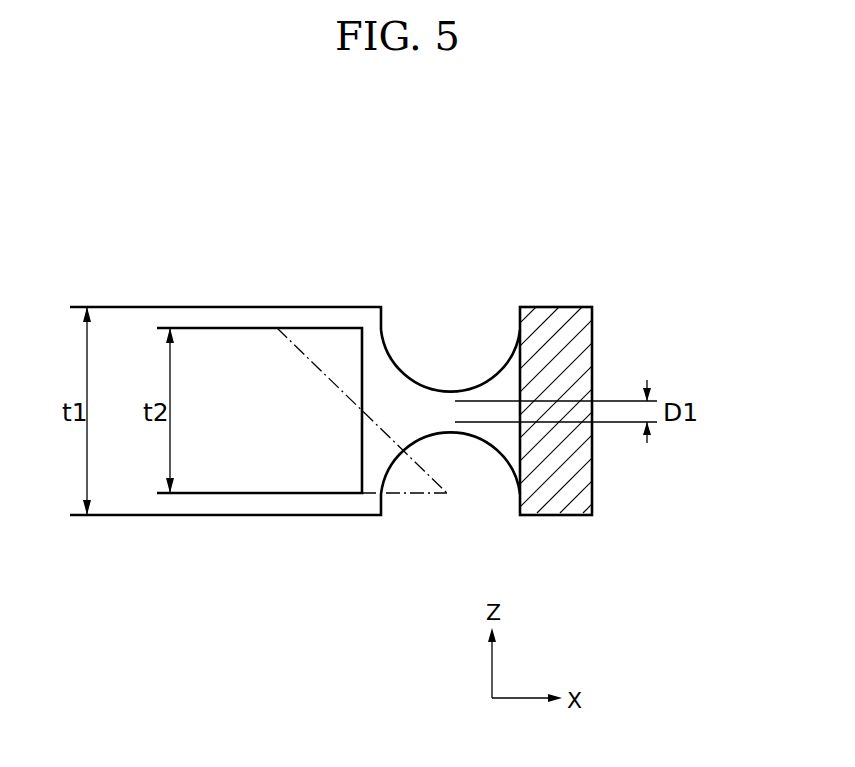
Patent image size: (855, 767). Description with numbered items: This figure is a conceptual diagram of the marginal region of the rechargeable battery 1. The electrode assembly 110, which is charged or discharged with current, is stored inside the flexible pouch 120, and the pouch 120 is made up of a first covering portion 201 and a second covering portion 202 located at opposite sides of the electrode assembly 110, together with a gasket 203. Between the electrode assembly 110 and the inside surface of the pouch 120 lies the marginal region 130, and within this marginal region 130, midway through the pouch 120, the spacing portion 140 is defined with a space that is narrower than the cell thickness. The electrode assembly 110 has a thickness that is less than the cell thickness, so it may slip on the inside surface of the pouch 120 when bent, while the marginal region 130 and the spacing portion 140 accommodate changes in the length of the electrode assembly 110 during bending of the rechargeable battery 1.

The rechargeable battery 1 is at (366, 169).
The electrode assembly 110 is at (285, 493).
The pouch 120 is at (706, 237).
The marginal region 130 is at (387, 385).
The spacing portion 140 is at (458, 370).
The first covering portion 201 is at (252, 307).
The second covering portion 202 is at (183, 515).
The gasket 203 is at (577, 325).